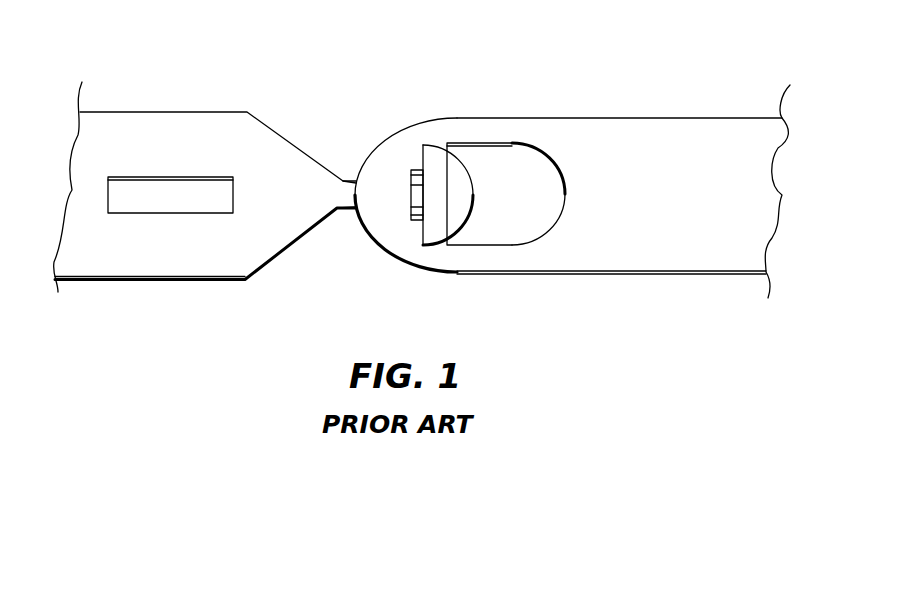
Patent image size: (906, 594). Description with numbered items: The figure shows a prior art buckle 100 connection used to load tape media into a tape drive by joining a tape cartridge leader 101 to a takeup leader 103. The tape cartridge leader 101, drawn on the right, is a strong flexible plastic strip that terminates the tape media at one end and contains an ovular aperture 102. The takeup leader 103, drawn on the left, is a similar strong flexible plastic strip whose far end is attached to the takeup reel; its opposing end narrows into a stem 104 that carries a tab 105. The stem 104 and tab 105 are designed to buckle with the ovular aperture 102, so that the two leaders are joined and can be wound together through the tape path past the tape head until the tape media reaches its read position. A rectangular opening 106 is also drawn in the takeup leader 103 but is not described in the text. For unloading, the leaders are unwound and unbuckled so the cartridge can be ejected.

The buckle 100 is at (398, 89).
The tape cartridge leader 101 is at (560, 118).
The ovular aperture 102 is at (497, 233).
The takeup leader 103 is at (178, 112).
The stem 104 is at (346, 183).
The tab 105 is at (465, 185).
The rectangular window 106 is at (165, 202).